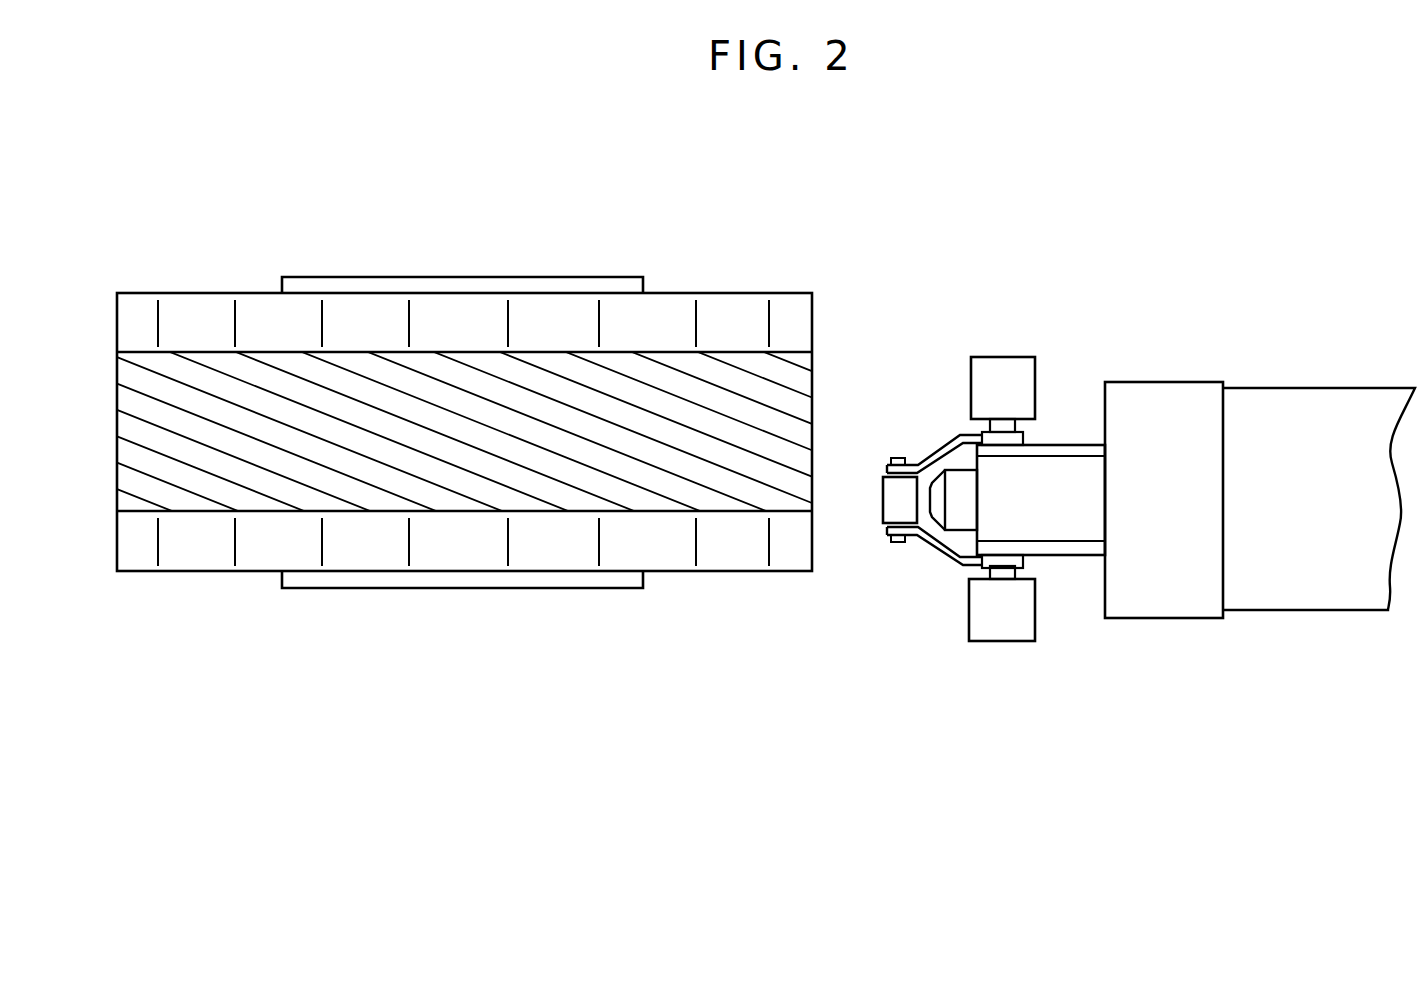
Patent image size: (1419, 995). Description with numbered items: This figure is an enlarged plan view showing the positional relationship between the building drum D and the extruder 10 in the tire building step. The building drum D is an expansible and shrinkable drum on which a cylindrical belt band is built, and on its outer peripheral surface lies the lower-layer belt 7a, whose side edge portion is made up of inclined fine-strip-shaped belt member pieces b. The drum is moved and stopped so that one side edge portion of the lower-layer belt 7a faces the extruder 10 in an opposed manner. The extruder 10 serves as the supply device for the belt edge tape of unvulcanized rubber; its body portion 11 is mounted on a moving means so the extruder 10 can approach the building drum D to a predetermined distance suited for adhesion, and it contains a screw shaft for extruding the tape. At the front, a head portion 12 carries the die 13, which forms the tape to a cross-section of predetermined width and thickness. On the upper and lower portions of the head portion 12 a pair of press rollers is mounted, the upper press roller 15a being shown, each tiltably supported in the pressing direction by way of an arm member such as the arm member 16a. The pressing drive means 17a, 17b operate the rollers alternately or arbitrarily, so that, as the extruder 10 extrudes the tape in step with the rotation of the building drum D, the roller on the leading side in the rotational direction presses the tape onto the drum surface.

The building drum D is at (581, 419).
The fine-strip-shaped belt member piece b is at (543, 385).
The belt 7a is at (613, 361).
The extruder 10 is at (1136, 462).
The body portion 11 is at (1290, 415).
The head portion 12 is at (1043, 510).
The die 13 is at (943, 512).
The upper press roller 15a is at (893, 497).
The arm member 16a is at (950, 438).
The pressing drive means 17a is at (1020, 372).
The pressing drive means 17b is at (1010, 630).